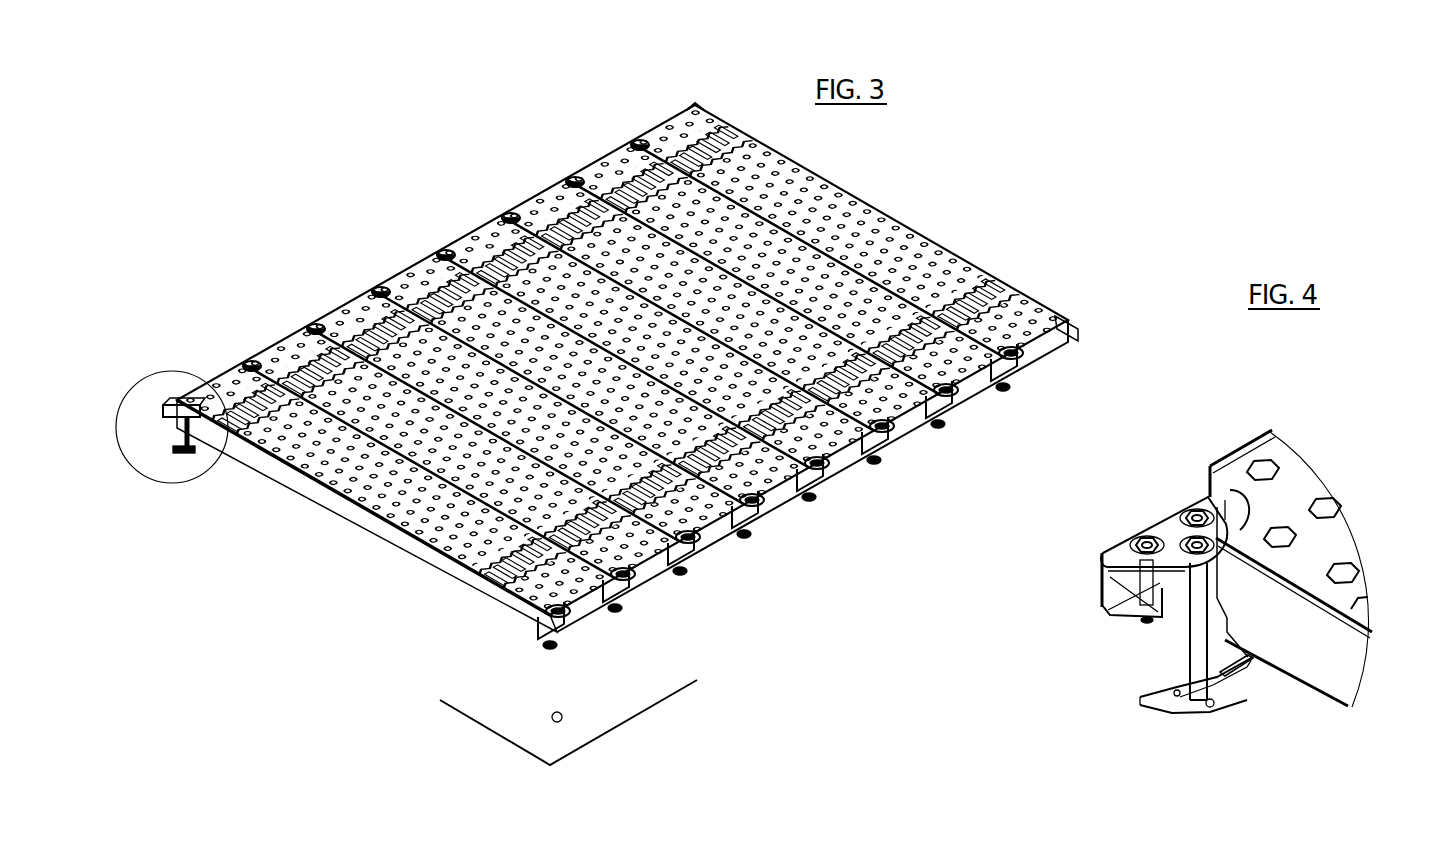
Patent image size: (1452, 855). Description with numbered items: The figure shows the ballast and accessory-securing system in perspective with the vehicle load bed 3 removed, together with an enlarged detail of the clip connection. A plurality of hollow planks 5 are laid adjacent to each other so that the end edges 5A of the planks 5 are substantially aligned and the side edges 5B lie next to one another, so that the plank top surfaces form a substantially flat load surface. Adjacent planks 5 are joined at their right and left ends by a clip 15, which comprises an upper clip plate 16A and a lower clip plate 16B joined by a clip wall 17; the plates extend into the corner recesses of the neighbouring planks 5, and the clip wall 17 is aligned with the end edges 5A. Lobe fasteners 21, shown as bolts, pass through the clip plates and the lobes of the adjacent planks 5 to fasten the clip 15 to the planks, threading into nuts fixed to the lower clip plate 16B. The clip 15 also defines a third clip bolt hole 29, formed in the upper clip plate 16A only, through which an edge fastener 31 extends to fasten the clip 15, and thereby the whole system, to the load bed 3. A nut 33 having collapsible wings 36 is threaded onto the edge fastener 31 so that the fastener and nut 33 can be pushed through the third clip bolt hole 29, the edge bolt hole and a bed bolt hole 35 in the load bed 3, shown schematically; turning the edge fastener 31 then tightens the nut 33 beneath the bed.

In FIG. 3, the vehicle load bed 3 is at (515, 720).
In FIG. 3, the hollow plank 5 is at (358, 508).
In FIG. 3, the end edge 5A is at (853, 468).
In FIG. 3, the side edge 5B is at (440, 567).
In FIG. 3, the clip 15 is at (620, 600).
In FIG. 4, the clip 15 is at (1105, 607).
In FIG. 4, the upper clip plate 16A is at (1153, 510).
In FIG. 4, the lower clip plate 16B is at (1127, 620).
In FIG. 3, the clip wall 17 is at (757, 520).
In FIG. 4, the clip wall 17 is at (1103, 560).
In FIG. 4, the lobe fastener 21 is at (1167, 530).
In FIG. 4, the third clip bolt hole 29 is at (1243, 528).
In FIG. 3, the edge fastener 31 is at (548, 652).
In FIG. 4, the edge fastener 31 is at (1142, 692).
In FIG. 4, the nut 33 is at (1215, 707).
In FIG. 3, the bed bolt hole 35 is at (562, 714).
In FIG. 4, the collapsible wing 36 is at (1237, 677).